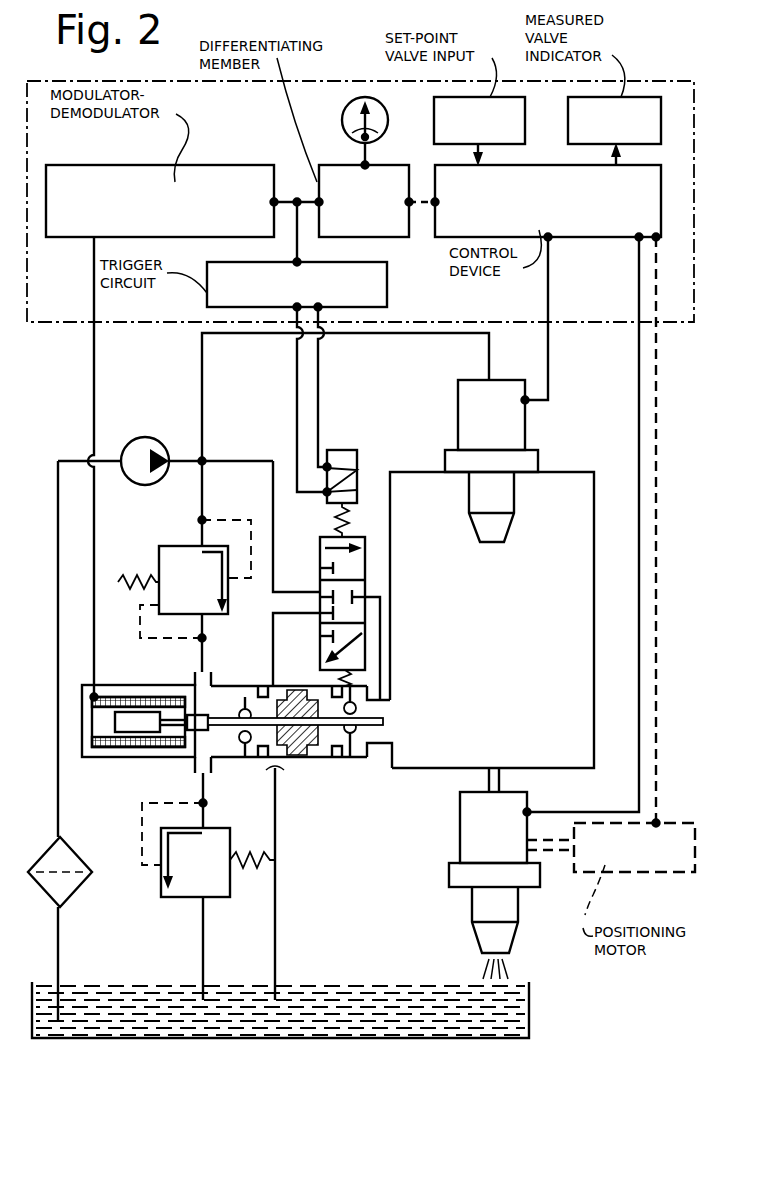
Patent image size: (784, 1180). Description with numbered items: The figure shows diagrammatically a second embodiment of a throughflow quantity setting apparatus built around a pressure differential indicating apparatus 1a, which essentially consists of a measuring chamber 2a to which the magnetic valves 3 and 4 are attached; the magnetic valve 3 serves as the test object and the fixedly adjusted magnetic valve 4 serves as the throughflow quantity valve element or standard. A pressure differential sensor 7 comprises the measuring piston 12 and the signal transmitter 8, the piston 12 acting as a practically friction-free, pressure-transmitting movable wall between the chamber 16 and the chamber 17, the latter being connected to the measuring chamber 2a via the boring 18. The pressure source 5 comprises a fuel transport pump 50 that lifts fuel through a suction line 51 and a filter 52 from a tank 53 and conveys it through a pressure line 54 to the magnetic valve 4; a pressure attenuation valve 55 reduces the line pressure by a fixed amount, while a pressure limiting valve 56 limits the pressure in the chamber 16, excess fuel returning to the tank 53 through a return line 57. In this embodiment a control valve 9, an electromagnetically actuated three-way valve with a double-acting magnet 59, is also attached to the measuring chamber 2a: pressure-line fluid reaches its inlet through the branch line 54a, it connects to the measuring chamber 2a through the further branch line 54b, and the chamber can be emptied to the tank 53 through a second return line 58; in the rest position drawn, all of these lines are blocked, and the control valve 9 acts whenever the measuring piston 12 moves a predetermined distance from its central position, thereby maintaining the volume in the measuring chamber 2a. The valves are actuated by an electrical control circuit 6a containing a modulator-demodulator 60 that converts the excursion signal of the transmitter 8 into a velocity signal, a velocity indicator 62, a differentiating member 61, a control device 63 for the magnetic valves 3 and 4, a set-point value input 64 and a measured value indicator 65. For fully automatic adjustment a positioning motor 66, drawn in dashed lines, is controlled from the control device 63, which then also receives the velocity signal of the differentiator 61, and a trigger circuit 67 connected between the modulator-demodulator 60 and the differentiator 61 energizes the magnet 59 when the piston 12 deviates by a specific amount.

The pressure differential indicating apparatus 1a is at (405, 452).
The measuring chamber 2a is at (496, 621).
The magnetic valve 3 is at (485, 838).
The magnetic valve 4 is at (512, 417).
The pressure source 5 is at (116, 428).
The electrical control circuit 6a is at (605, 340).
The pressure differential sensor 7 is at (258, 677).
The signal transmitter 8 is at (126, 765).
The control valve 9 is at (320, 565).
The measuring piston 12 is at (324, 757).
The chamber 16 is at (218, 692).
The chamber 17 is at (325, 700).
The boring 18 is at (388, 706).
The fuel transport pump 50 is at (146, 450).
The suction line 51 is at (58, 722).
The filter 52 is at (58, 865).
The tank 53 is at (301, 1055).
The pressure line 54 is at (203, 400).
The branch line 54a is at (243, 460).
The further branch line 54b is at (386, 596).
The pressure attenuation valve 55 is at (170, 572).
The pressure limiting valve 56 is at (218, 885).
The return line 57 is at (203, 963).
The second return line 58 is at (275, 833).
The double-acting magnet 59 is at (344, 462).
The modulator-demodulator 60 is at (140, 183).
The differentiating member 61 is at (326, 185).
The velocity indicator 62 is at (350, 124).
The control device 63 is at (596, 240).
The set-point value input 64 is at (438, 123).
The measured value indicator 65 is at (570, 112).
The positioning motor 66 is at (659, 862).
The trigger circuit 67 is at (374, 284).